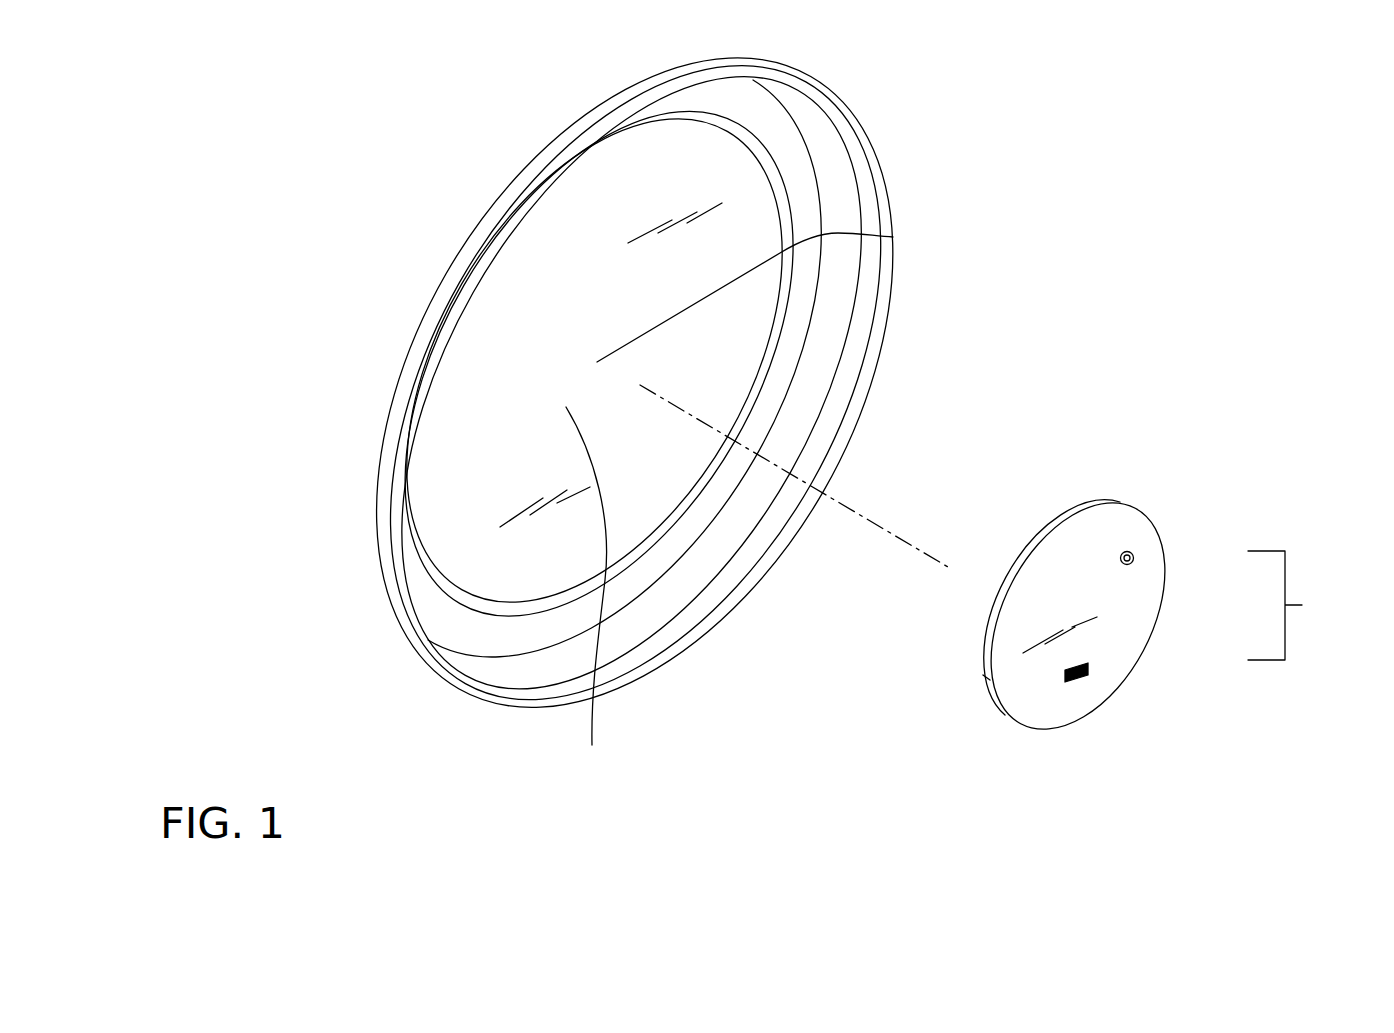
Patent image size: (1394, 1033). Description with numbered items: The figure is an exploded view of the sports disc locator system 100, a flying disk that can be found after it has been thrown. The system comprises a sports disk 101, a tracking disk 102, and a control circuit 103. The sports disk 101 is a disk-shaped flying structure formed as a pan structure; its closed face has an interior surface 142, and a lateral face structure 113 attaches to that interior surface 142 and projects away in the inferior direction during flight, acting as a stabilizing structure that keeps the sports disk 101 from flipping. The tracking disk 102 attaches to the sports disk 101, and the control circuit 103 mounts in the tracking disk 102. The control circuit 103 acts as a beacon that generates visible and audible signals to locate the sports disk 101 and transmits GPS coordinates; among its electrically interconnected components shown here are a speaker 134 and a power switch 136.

The sports disc locator system 100 is at (1168, 259).
The sports disk 101 is at (878, 163).
The tracking disk 102 is at (1103, 498).
The control circuit 103 is at (1311, 605).
The lateral face structure 113 is at (642, 657).
The speaker 134 is at (1086, 671).
The power switch 136 is at (1137, 555).
The interior surface 142 is at (597, 603).